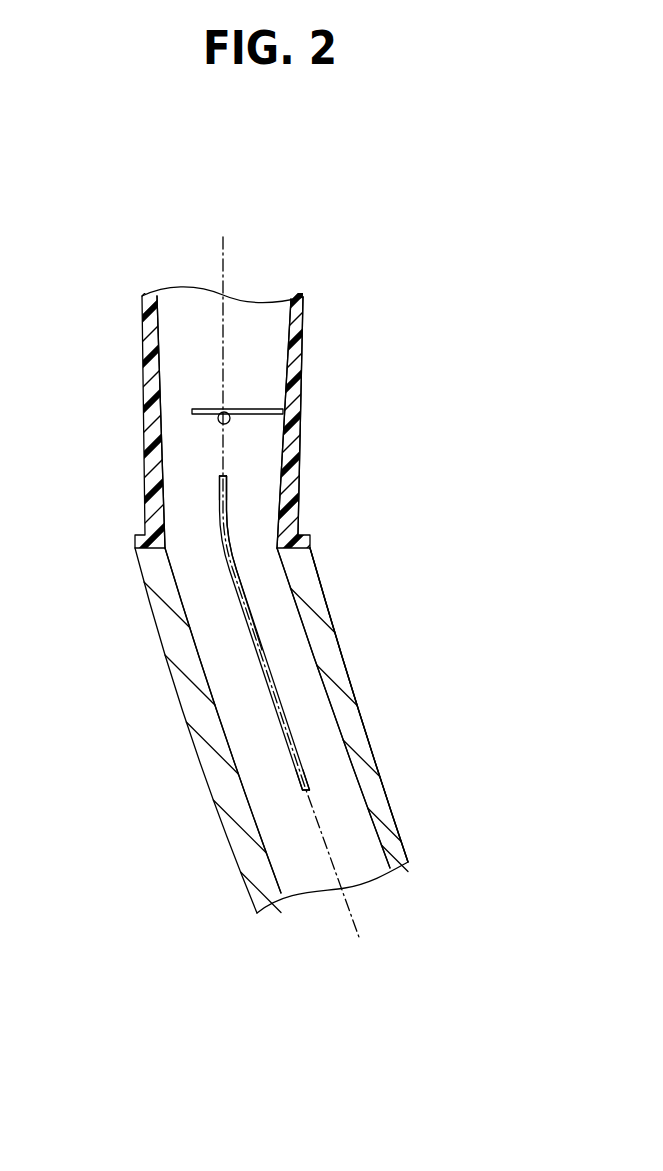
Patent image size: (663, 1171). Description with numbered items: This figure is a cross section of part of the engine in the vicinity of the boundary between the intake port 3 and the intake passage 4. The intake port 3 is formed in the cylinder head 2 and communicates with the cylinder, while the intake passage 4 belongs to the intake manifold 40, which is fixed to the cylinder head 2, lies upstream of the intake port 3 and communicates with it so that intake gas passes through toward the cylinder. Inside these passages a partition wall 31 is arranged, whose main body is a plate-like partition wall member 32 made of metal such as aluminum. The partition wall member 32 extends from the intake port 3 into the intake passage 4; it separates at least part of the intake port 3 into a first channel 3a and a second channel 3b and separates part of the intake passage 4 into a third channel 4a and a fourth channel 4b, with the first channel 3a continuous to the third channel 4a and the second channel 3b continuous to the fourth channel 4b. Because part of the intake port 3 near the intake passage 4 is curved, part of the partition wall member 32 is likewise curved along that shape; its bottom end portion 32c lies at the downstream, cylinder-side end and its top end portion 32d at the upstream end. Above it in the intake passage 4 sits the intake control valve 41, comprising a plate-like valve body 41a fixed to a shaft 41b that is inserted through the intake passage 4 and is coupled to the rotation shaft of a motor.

The cylinder head 2 is at (315, 602).
The intake port 3 is at (223, 237).
The first channel 3a is at (313, 700).
The second channel 3b is at (230, 695).
The intake passage 4 is at (275, 357).
The third channel 4a is at (257, 508).
The fourth channel 4b is at (187, 510).
The intake manifold 40 is at (304, 322).
The intake control valve 41 is at (310, 421).
The valve body 41a is at (286, 408).
The shaft 41b is at (230, 420).
The partition wall 31 is at (225, 598).
The partition wall member 32 is at (243, 625).
The bottom end portion 32c is at (306, 790).
The top end portion 32d is at (222, 478).